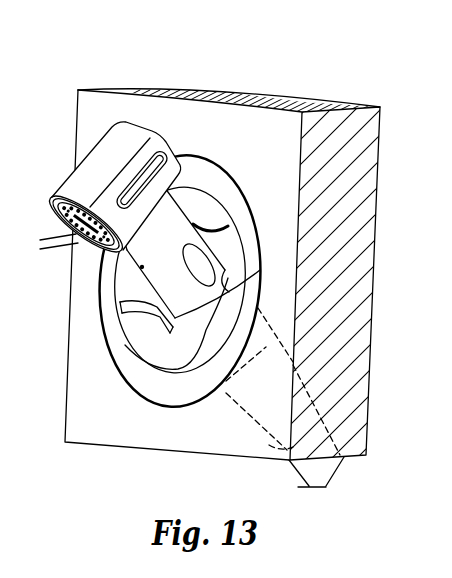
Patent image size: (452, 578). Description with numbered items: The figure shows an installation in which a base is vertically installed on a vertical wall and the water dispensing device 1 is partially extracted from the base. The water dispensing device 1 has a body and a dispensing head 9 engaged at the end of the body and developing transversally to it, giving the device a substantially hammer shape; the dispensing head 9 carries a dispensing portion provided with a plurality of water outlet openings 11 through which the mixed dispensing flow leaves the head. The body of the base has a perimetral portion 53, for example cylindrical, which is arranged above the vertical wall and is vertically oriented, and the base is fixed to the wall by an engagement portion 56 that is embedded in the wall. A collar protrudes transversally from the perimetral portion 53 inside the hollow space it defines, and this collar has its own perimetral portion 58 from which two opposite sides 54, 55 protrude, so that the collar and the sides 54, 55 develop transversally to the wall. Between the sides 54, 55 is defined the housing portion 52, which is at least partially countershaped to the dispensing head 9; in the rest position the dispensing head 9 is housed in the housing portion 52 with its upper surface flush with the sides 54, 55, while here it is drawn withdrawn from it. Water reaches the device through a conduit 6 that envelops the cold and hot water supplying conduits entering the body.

The water dispensing device 1 is at (99, 147).
The dispensing head 9 is at (80, 182).
The water outlet openings 11 is at (48, 250).
The side 55 is at (200, 222).
The perimetral portion 53 is at (228, 197).
The housing portion 52 is at (229, 251).
The perimetral portion of the collar 58 is at (227, 296).
The side 54 is at (137, 313).
The engagement portion 56 is at (293, 362).
The conduit 6 is at (321, 475).